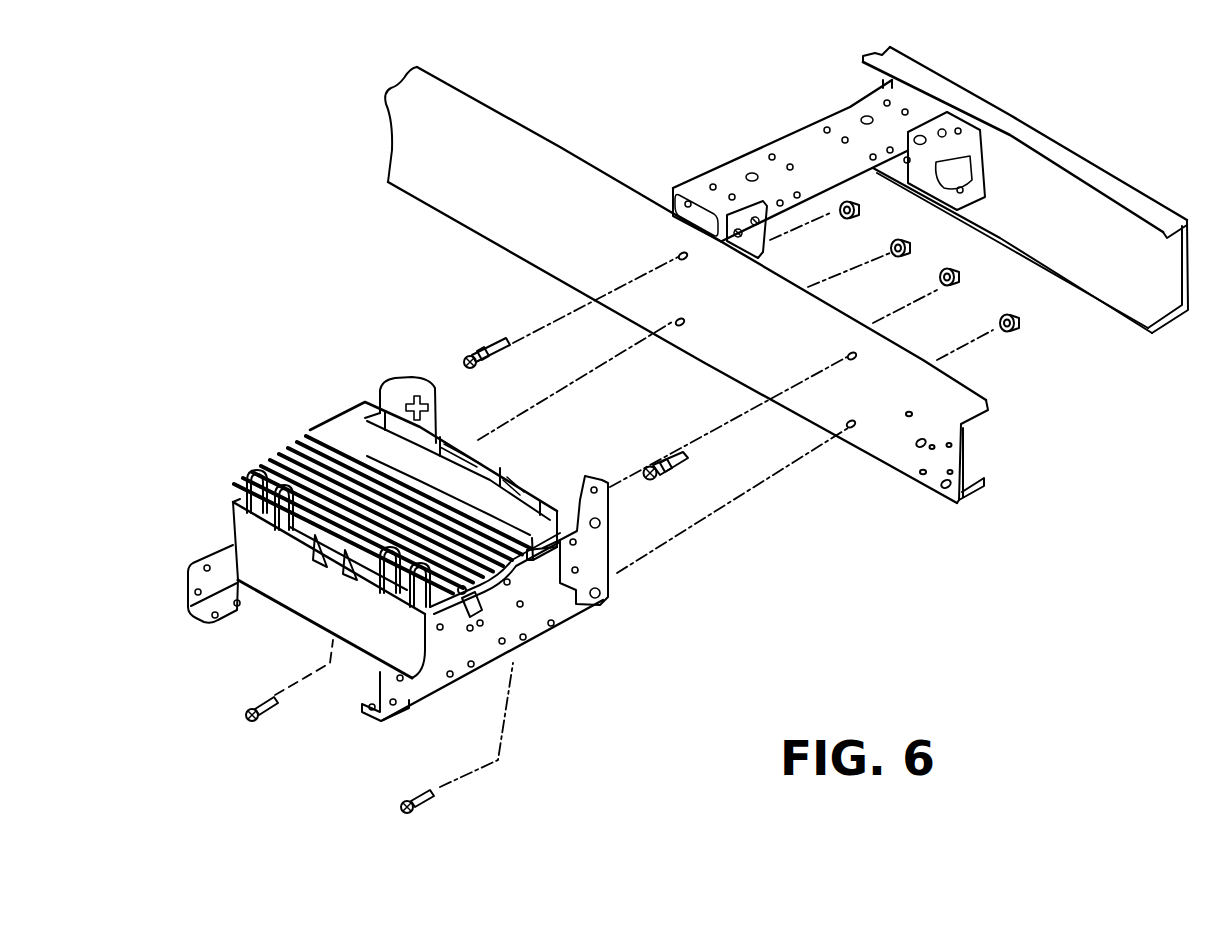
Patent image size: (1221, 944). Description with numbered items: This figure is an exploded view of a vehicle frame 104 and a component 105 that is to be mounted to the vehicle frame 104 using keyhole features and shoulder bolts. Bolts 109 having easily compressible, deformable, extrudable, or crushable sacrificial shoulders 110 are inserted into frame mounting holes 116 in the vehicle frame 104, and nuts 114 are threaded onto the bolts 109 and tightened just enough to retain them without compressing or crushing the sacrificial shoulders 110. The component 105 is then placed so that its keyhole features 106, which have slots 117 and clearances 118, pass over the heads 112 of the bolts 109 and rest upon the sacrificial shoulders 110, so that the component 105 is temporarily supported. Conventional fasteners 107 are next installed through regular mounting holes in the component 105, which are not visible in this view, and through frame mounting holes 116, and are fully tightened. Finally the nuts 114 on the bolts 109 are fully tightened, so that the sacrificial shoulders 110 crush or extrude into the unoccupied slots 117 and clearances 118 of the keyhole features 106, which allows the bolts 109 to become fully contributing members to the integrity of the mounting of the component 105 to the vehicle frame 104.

The vehicle frame 104 is at (437, 137).
The component 105 is at (310, 433).
The keyhole features 106 is at (516, 419).
The conventional fasteners 107 is at (250, 720).
The bolts 109 is at (497, 343).
The sacrificial shoulders 110 is at (475, 357).
The heads 112 is at (462, 363).
The nuts 114 is at (860, 205).
The frame mounting holes 116 is at (675, 315).
The slots 117 is at (407, 388).
The clearances 118 is at (388, 393).